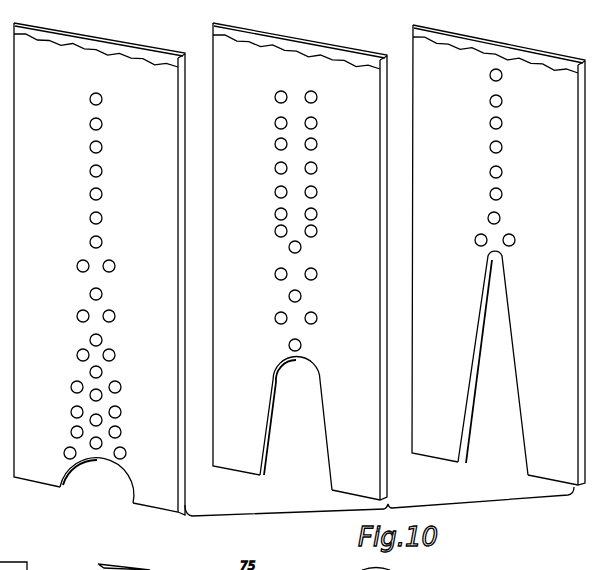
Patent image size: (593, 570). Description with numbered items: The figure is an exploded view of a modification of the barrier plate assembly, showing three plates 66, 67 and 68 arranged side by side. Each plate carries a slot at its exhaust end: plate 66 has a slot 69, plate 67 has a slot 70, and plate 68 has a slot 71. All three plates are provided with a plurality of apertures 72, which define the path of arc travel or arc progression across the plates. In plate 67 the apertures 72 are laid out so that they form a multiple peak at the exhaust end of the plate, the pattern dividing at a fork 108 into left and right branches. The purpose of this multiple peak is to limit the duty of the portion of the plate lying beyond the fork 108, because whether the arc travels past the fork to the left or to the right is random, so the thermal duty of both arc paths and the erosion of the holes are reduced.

The plate 66 is at (99, 269).
The plate 67 is at (300, 261).
The plate 68 is at (498, 255).
The slot 69 is at (72, 480).
The slot 70 is at (320, 425).
The slot 71 is at (513, 407).
The apertures 72 is at (120, 428).
The fork 108 is at (301, 245).